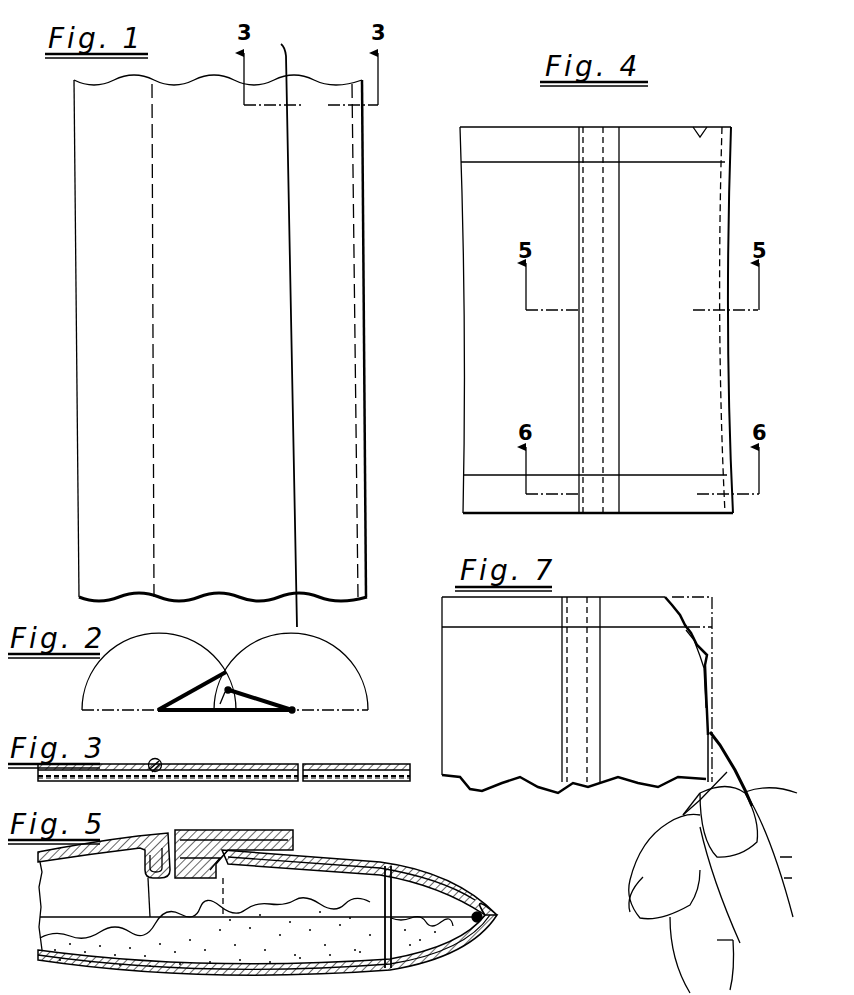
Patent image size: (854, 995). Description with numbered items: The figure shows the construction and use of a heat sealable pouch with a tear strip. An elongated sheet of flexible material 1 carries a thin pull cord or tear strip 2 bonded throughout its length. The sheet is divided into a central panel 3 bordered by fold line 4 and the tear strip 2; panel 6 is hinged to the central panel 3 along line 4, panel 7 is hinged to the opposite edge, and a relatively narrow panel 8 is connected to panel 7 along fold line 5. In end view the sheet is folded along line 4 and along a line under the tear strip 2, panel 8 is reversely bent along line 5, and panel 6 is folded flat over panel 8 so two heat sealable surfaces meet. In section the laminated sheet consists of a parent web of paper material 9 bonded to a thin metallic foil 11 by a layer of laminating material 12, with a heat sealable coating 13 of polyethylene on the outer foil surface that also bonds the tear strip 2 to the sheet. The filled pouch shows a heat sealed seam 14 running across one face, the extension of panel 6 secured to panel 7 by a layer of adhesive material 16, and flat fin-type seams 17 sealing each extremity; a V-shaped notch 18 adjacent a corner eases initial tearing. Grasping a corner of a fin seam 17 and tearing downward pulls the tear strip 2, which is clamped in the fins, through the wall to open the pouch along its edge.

In FIG. 1, the sheet of flexible material 1 is at (368, 189).
In FIG. 1, the tear strip 2 is at (290, 412).
In FIG. 2, the tear strip 2 is at (294, 708).
In FIG. 3, the tear strip 2 is at (160, 760).
In FIG. 5, the tear strip 2 is at (489, 917).
In FIG. 4, the tear strip 2 is at (722, 347).
In FIG. 7, the tear strip 2 is at (722, 742).
In FIG. 1, the central panel 3 is at (230, 351).
In FIG. 2, the central panel 3 is at (238, 712).
In FIG. 1, the fold line 4 is at (155, 533).
In FIG. 1, the fold line 5 is at (357, 530).
In FIG. 1, the panel 6 is at (121, 463).
In FIG. 2, the panel 6 is at (192, 681).
In FIG. 5, the panel 6 is at (258, 830).
In FIG. 4, the panel 6 is at (528, 391).
In FIG. 1, the panel 7 is at (331, 463).
In FIG. 2, the panel 7 is at (272, 690).
In FIG. 5, the panel 7 is at (350, 862).
In FIG. 4, the panel 7 is at (676, 408).
In FIG. 1, the narrow panel 8 is at (360, 403).
In FIG. 2, the narrow panel 8 is at (232, 686).
In FIG. 5, the narrow panel 8 is at (183, 832).
In FIG. 4, the narrow panel 8 is at (590, 342).
In FIG. 3, the parent web 9 is at (350, 782).
In FIG. 3, the metallic foil 11 is at (410, 764).
In FIG. 3, the laminating material 12 is at (410, 777).
In FIG. 3, the heat sealable coating 13 is at (332, 766).
In FIG. 5, the heat sealable coating 13 is at (465, 946).
In FIG. 4, the heat sealed seam 14 is at (600, 258).
In FIG. 5, the adhesive layer 16 is at (293, 848).
In FIG. 4, the fin-type seam 17 is at (536, 136).
In FIG. 7, the fin-type seam 17 is at (632, 607).
In FIG. 4, the V-shaped notch 18 is at (700, 124).